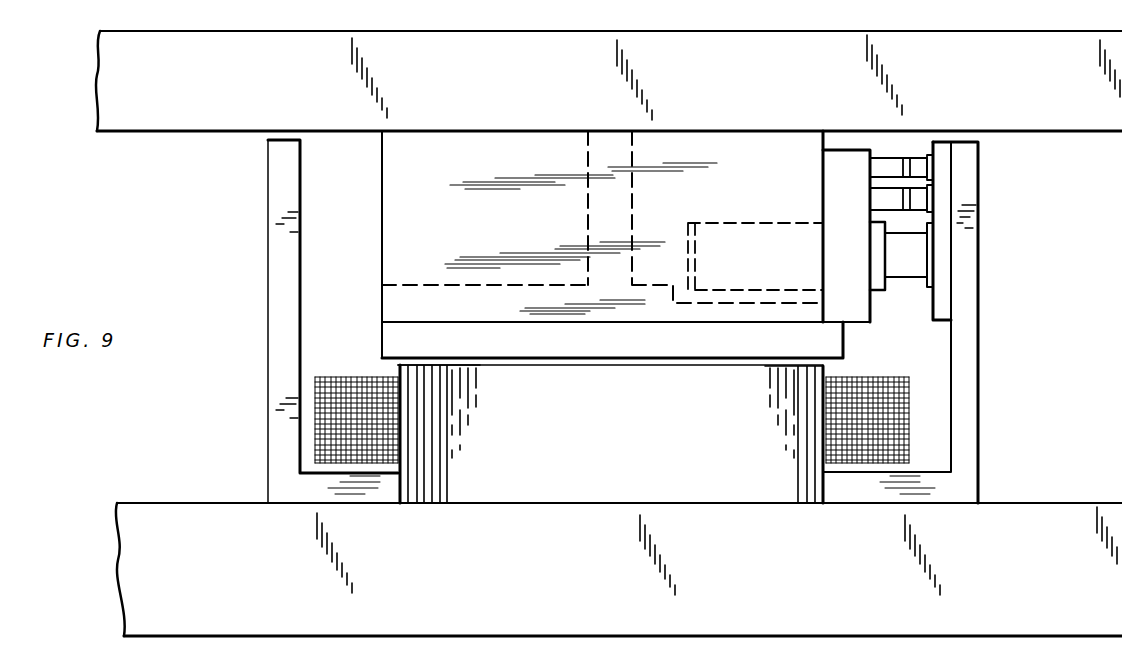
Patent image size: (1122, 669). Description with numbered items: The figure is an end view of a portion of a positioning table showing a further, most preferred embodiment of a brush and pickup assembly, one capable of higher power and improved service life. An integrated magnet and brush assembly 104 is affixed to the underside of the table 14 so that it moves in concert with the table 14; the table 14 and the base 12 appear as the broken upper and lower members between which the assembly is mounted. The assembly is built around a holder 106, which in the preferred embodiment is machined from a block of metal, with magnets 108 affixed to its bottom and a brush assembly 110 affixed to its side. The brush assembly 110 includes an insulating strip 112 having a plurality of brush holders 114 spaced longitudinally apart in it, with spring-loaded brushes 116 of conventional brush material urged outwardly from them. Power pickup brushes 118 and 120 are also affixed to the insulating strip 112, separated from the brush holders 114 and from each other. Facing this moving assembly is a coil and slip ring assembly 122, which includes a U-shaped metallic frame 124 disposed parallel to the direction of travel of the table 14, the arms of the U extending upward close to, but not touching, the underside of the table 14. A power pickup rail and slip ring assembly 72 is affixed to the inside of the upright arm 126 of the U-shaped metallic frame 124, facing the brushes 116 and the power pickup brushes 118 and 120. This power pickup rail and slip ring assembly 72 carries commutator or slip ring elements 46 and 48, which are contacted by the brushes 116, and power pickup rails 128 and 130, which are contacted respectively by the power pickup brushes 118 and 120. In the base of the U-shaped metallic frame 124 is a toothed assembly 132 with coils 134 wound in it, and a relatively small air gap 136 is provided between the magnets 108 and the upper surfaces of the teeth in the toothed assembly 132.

The lower plate 12 is at (157, 500).
The table 14 is at (1073, 118).
The slip ring element 46 is at (992, 266).
The slip ring element 48 is at (932, 283).
The power pickup rail and slip ring assembly 72 is at (943, 310).
The integrated magnet and brush assembly 104 is at (352, 249).
The holder 106 is at (383, 205).
The magnets 108 is at (382, 335).
The brush assembly 110 is at (850, 150).
The insulating strip 112 is at (823, 187).
The brush holders 114 is at (743, 226).
The spring-loaded brushes 116 is at (912, 282).
The power pickup brush 118 is at (888, 163).
The power pickup brush 120 is at (887, 200).
The coil and slip ring assembly 122 is at (1060, 418).
The U-shaped metallic frame 124 is at (268, 417).
The upright arm 126 is at (968, 247).
The power pickup rail 128 is at (935, 170).
The power pickup rail 130 is at (935, 200).
The toothed assembly 132 is at (708, 472).
The coils 134 is at (315, 450).
The air gap 136 is at (385, 363).